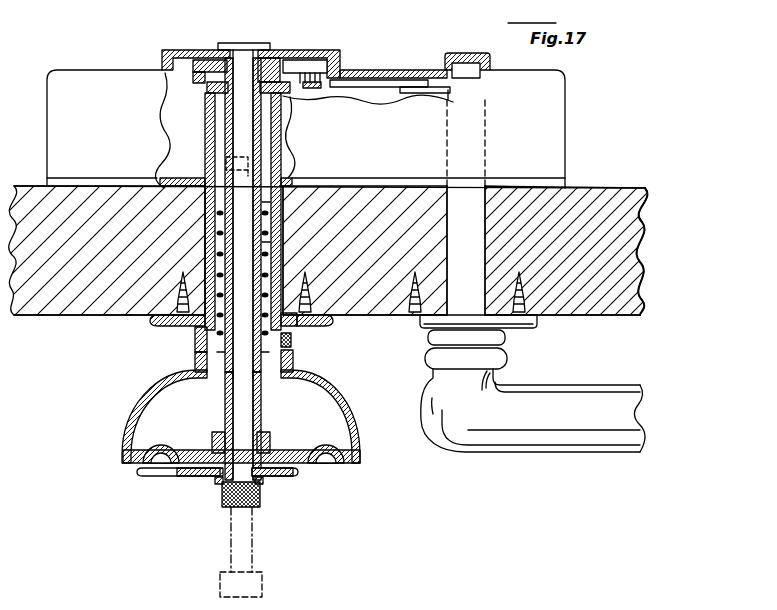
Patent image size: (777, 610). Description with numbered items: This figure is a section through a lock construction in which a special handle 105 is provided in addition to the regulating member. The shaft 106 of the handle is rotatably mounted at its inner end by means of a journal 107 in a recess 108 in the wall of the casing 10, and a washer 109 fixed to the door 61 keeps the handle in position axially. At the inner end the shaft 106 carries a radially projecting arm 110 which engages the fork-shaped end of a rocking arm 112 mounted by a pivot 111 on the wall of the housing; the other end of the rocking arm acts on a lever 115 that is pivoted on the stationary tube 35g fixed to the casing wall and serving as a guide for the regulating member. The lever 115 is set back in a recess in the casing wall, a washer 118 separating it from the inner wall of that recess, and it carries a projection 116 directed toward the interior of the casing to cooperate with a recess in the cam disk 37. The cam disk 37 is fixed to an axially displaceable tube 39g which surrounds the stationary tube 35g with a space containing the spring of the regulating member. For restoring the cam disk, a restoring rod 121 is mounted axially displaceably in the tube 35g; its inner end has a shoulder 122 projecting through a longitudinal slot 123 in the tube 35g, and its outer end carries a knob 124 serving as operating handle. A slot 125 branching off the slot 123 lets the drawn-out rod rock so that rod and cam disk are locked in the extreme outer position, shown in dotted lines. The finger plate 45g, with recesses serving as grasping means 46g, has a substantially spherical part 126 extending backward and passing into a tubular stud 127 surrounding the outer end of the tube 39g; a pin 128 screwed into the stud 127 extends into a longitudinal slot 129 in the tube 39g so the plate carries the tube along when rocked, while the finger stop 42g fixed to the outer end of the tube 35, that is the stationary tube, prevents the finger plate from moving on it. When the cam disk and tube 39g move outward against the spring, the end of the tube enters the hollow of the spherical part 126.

The casing 10 is at (545, 127).
The tube 35 is at (266, 72).
The stationary tube 35g is at (270, 392).
The cam disk 37 is at (210, 88).
The axially displaceable tube 39g is at (197, 333).
The finger stop 42g is at (190, 478).
The finger plate 45g is at (299, 471).
The grasping means 46g is at (326, 466).
The door 61 is at (600, 306).
The handle 105 is at (557, 445).
The shaft 106 is at (473, 240).
The journal 107 is at (485, 69).
The recess 108 is at (463, 57).
The washer 109 is at (500, 341).
The arm 110 is at (430, 85).
The pivot 111 is at (392, 90).
The rocking arm 112 is at (347, 88).
The lever 115 is at (305, 67).
The projection 116 is at (193, 73).
The washer 118 is at (216, 60).
The restoring rod 121 is at (245, 430).
The shoulder 122 is at (250, 38).
The longitudinal slot 123 is at (228, 123).
The knob 124 is at (225, 500).
The branch slot 125 is at (226, 161).
The spherical part 126 is at (362, 428).
The tubular stud 127 is at (195, 356).
The pin 128 is at (292, 345).
The longitudinal slot 129 is at (297, 328).